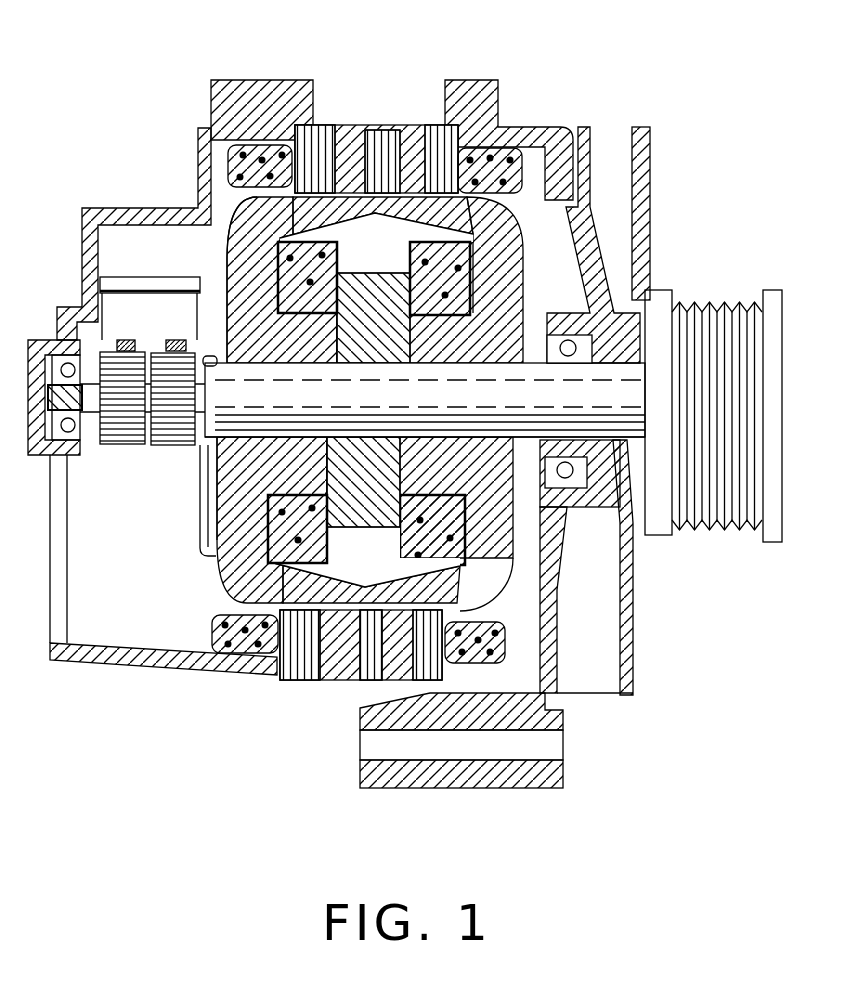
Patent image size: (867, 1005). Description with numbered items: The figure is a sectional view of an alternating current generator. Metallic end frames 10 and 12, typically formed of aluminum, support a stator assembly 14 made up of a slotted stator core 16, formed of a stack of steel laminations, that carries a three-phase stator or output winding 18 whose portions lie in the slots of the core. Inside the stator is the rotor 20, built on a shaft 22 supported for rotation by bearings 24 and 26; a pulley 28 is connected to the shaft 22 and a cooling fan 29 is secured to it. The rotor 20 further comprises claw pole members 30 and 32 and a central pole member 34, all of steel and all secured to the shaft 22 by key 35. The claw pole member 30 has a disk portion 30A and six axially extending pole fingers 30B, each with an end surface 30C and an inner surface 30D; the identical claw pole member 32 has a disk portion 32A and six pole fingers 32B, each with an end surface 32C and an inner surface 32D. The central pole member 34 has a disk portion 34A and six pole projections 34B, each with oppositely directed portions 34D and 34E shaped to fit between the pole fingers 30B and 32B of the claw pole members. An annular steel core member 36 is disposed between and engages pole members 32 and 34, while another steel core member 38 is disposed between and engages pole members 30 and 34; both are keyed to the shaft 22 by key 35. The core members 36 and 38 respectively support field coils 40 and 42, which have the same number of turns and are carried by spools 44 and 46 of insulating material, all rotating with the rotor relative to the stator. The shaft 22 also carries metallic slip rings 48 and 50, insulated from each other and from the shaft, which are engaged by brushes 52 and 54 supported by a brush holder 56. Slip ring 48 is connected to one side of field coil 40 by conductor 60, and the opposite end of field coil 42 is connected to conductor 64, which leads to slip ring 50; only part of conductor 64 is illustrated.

The end frame 10 is at (257, 80).
The end frame 12 is at (478, 80).
The stator assembly 14 is at (368, 120).
The stator core 16 is at (352, 125).
The stator winding 18 is at (518, 215).
The rotor 20 is at (527, 240).
The shaft 22 is at (218, 433).
The bearing 24 is at (42, 452).
The bearing 26 is at (583, 345).
The pulley 28 is at (700, 305).
The cooling fan 29 is at (642, 200).
The claw pole member 30 is at (560, 250).
The disk portion 30A is at (492, 485).
The pole finger 30B is at (333, 290).
The end surface 30C is at (345, 200).
The inner surface 30D is at (478, 192).
The claw pole member 32 is at (235, 222).
The disk portion 32A is at (237, 497).
The pole finger 32B is at (320, 225).
The end surface 32C is at (380, 205).
The inner surface 32D is at (298, 200).
The central pole member 34 is at (351, 272).
The disk portion 34A is at (367, 473).
The pole projection 34B is at (322, 643).
The projection portion 34D is at (278, 588).
The projection portion 34E is at (367, 627).
The key 35 is at (380, 360).
The core member 36 is at (286, 465).
The core member 38 is at (447, 378).
The field coil 40 is at (252, 236).
The field coil 42 is at (460, 327).
The spool 44 is at (270, 268).
The spool 46 is at (475, 278).
The slip ring 48 is at (115, 440).
The slip ring 50 is at (170, 432).
The brush 52 is at (125, 338).
The brush 54 is at (180, 338).
The brush holder 56 is at (162, 277).
The conductor 60 is at (214, 335).
The conductor 64 is at (202, 530).